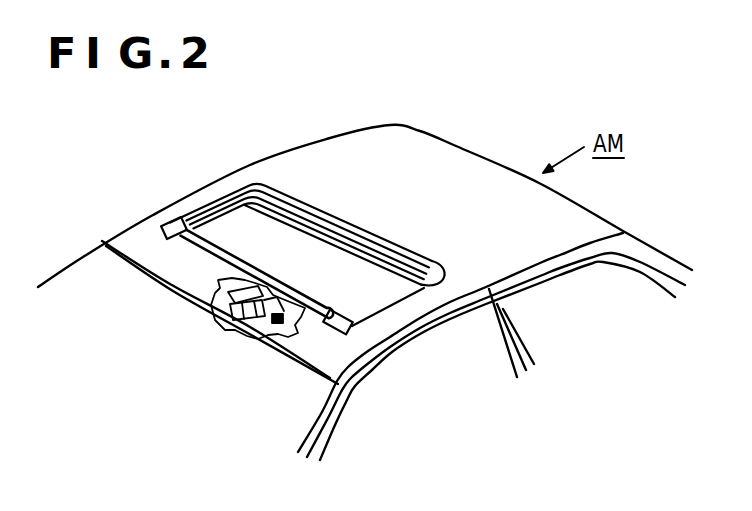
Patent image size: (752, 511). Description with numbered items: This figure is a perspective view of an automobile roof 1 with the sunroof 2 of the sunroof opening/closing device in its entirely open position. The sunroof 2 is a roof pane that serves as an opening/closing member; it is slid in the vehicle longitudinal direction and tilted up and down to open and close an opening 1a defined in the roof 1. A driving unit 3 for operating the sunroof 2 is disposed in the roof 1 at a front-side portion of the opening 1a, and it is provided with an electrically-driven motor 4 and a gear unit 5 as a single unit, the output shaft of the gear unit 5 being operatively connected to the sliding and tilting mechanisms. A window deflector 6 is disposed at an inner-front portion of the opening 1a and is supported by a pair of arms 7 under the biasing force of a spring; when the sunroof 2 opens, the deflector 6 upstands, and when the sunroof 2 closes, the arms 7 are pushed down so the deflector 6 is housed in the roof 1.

The roof 1 is at (456, 146).
The opening 1a is at (400, 308).
The sunroof 2 is at (343, 233).
The driving unit 3 is at (240, 328).
The motor 4 is at (268, 323).
The gear unit 5 is at (232, 321).
The window deflector 6 is at (258, 269).
The arms 7 is at (191, 215).